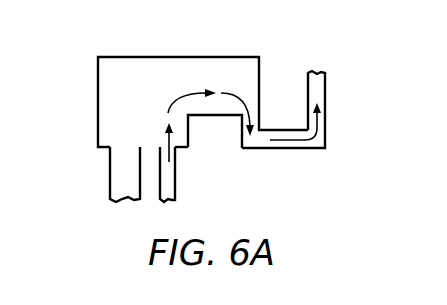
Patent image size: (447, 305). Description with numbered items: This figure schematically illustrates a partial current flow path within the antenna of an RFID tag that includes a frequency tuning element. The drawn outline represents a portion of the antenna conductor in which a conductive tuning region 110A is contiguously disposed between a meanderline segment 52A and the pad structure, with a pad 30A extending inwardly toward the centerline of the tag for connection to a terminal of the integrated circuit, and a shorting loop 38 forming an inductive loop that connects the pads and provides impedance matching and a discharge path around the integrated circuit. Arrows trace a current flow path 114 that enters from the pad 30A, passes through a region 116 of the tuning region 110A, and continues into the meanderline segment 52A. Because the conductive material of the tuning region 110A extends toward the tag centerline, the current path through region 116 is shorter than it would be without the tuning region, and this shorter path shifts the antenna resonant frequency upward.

The conductive tuning region 110A is at (209, 63).
The current flow path 114 is at (172, 101).
The region of the tuning region 116 is at (217, 107).
The meanderline segment 52A is at (326, 98).
The shorting loop 38 is at (120, 178).
The pad 30A is at (177, 183).